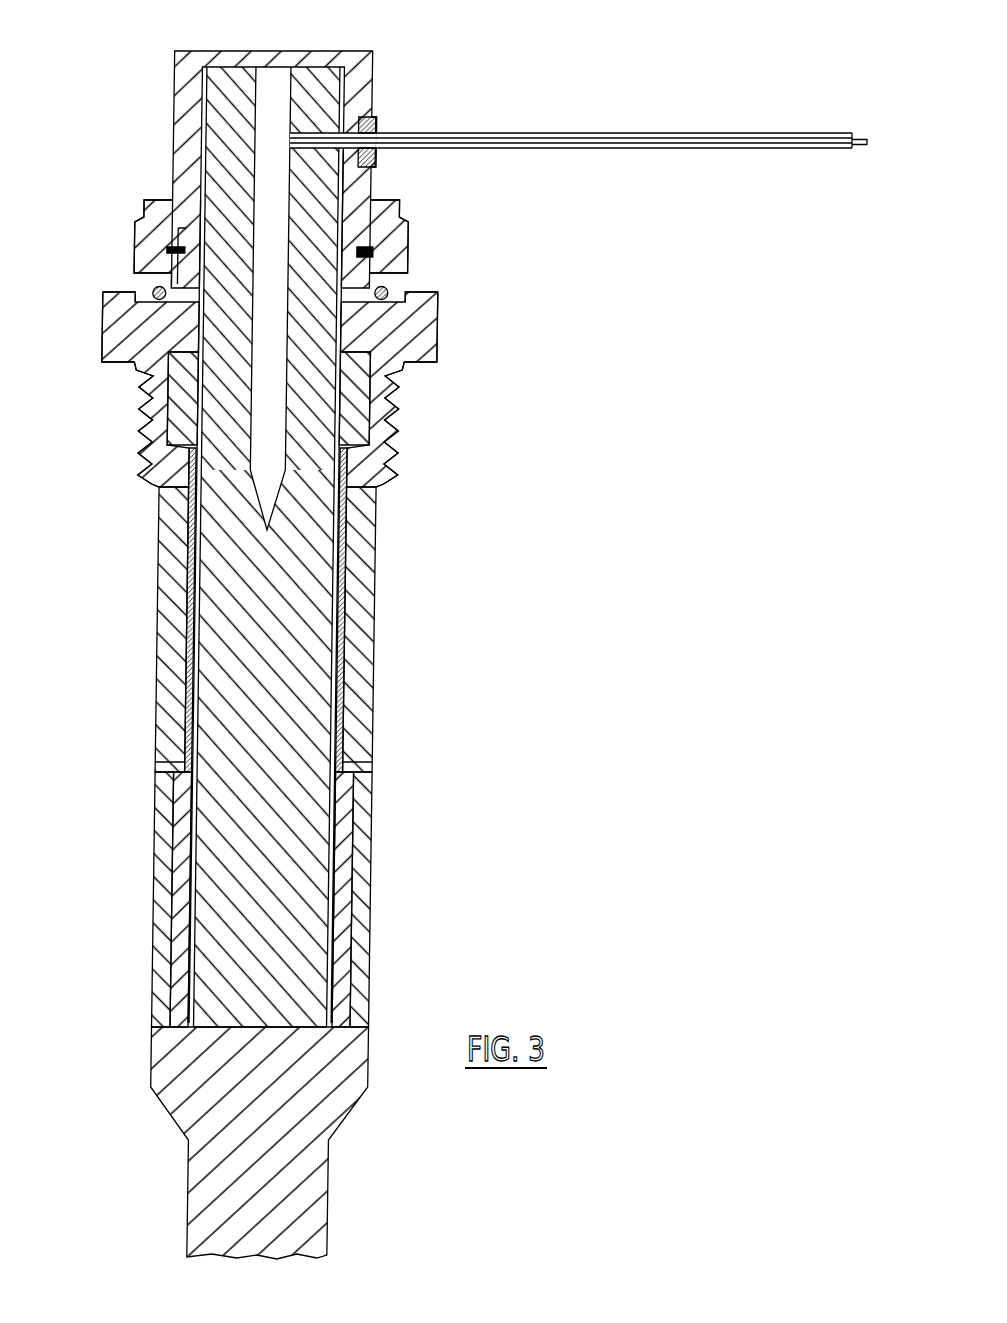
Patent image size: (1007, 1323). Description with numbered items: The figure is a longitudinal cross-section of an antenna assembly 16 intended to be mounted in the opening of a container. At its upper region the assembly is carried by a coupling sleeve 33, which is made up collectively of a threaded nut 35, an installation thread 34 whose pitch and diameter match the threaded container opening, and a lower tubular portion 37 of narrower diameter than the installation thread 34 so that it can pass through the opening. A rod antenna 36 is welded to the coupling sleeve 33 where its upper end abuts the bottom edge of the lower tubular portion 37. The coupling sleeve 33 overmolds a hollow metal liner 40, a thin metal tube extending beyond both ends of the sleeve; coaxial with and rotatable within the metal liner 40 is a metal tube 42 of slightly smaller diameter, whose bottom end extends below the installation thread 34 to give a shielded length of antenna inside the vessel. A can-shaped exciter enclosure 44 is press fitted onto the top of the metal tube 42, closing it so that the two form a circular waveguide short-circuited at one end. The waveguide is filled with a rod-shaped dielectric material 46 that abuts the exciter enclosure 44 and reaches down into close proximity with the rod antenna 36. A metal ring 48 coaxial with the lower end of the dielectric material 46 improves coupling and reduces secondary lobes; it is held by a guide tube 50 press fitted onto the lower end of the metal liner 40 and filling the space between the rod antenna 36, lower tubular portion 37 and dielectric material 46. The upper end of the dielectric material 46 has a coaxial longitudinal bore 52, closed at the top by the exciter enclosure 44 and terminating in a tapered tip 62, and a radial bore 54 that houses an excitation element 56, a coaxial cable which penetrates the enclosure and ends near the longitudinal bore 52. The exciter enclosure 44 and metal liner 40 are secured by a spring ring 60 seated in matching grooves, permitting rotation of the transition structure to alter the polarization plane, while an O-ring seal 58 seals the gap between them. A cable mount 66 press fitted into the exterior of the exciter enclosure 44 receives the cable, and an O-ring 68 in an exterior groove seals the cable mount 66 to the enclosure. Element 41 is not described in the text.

The antenna assembly 16 is at (103, 82).
The coupling sleeve 33 is at (92, 342).
The installation thread 34 is at (143, 403).
The threaded nut 35 is at (113, 317).
The rod antenna 36 is at (317, 1157).
The lower tubular portion 37 is at (172, 553).
The metal liner 40 is at (358, 384).
The insulating sleeve 41 is at (343, 728).
The metal tube 42 is at (202, 203).
The exciter enclosure 44 is at (200, 60).
The dielectric material 46 is at (251, 726).
The metal ring 48 is at (350, 998).
The guide tube 50 is at (340, 907).
The longitudinal bore 52 is at (257, 225).
The radial bore 54 is at (296, 170).
The excitation element 56 is at (302, 125).
The O-ring seal 58 is at (389, 291).
The spring ring 60 is at (380, 240).
The tapered tip 62 is at (268, 487).
The cable mount 66 is at (380, 120).
The O-ring 68 is at (380, 153).